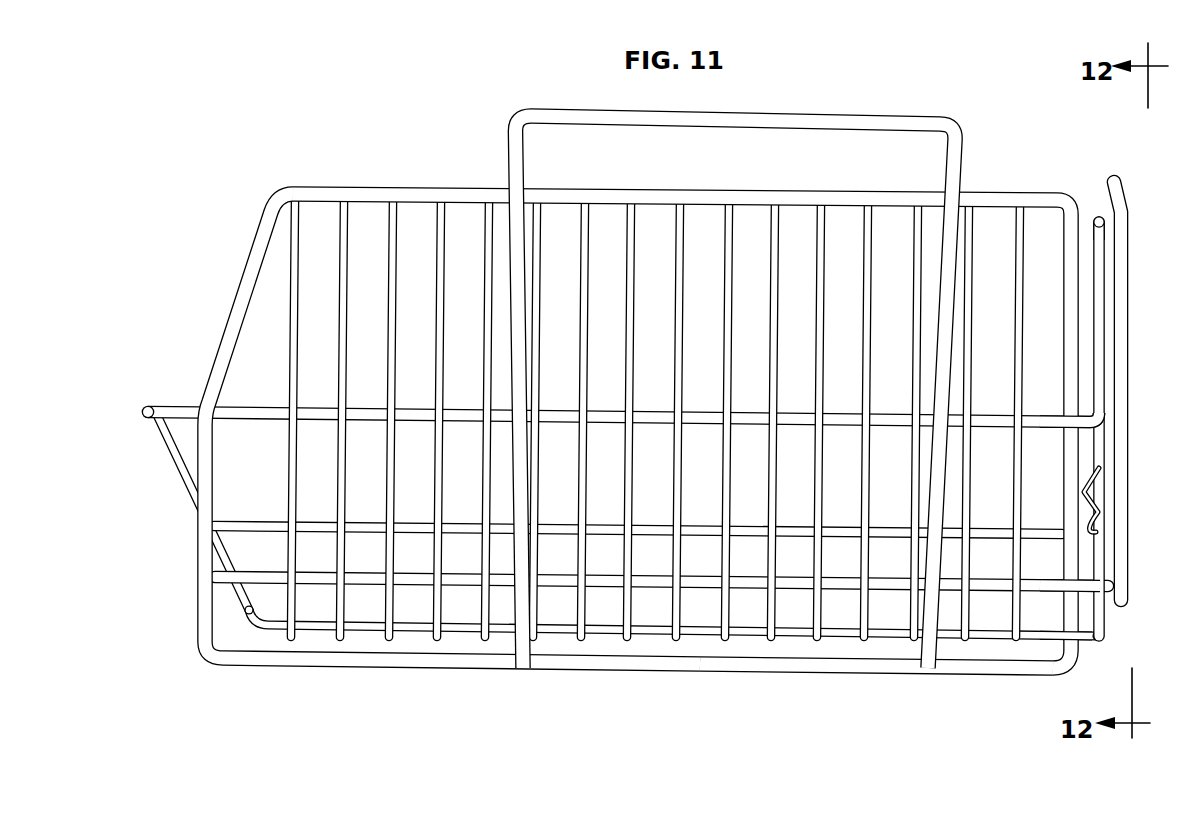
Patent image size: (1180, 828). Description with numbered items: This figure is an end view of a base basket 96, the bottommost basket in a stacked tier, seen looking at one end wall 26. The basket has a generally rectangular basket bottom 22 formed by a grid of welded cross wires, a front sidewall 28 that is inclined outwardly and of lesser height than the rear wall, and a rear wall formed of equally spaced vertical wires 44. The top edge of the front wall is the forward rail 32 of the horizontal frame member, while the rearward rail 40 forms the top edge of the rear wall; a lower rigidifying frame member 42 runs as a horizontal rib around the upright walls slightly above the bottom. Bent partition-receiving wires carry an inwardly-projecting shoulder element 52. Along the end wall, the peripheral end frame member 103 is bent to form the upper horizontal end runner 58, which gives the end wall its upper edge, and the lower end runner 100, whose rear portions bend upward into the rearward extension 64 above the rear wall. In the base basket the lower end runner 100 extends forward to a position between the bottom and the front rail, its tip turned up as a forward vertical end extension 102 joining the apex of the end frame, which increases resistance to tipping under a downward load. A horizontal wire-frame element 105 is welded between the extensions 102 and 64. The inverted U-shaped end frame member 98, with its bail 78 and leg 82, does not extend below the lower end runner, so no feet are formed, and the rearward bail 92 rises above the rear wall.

The basket bottom 22 is at (619, 558).
The end wall 26 is at (598, 437).
The front sidewall 28 is at (176, 458).
The forward rail 32 is at (153, 404).
The rearward rail 40 is at (1108, 213).
The lower rigidifying frame member 42 is at (252, 594).
The vertical wires 44 is at (1102, 342).
The shoulder element 52 is at (1100, 521).
The upper horizontal end runner 58 is at (707, 195).
The rearward extension 64 is at (651, 396).
The bail 78 is at (717, 394).
The leg 82 is at (948, 509).
The rearward bail 92 is at (1121, 186).
The base basket 96 is at (772, 680).
The inverted U-shaped end frame member 98 is at (510, 656).
The lower end runner 100 is at (386, 664).
The forward vertical end extension 102 is at (198, 552).
The peripheral end frame member 103 is at (198, 408).
The horizontal wire-frame element 105 is at (267, 488).